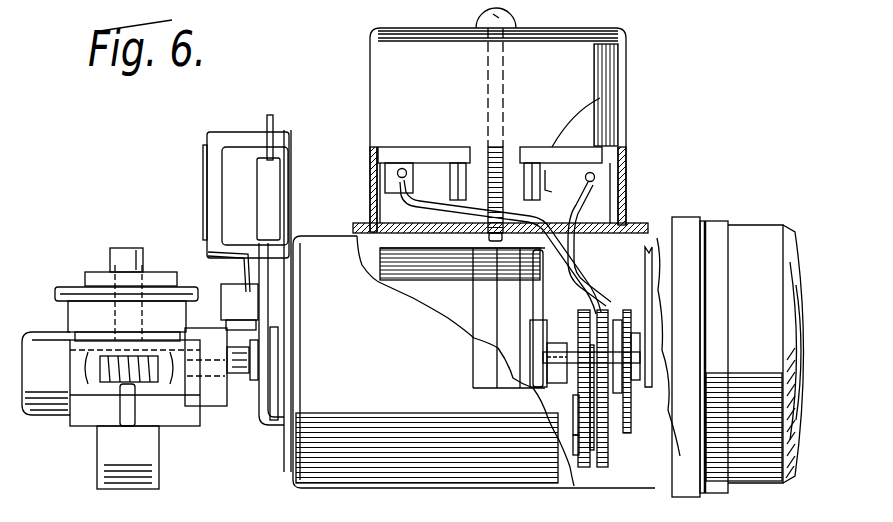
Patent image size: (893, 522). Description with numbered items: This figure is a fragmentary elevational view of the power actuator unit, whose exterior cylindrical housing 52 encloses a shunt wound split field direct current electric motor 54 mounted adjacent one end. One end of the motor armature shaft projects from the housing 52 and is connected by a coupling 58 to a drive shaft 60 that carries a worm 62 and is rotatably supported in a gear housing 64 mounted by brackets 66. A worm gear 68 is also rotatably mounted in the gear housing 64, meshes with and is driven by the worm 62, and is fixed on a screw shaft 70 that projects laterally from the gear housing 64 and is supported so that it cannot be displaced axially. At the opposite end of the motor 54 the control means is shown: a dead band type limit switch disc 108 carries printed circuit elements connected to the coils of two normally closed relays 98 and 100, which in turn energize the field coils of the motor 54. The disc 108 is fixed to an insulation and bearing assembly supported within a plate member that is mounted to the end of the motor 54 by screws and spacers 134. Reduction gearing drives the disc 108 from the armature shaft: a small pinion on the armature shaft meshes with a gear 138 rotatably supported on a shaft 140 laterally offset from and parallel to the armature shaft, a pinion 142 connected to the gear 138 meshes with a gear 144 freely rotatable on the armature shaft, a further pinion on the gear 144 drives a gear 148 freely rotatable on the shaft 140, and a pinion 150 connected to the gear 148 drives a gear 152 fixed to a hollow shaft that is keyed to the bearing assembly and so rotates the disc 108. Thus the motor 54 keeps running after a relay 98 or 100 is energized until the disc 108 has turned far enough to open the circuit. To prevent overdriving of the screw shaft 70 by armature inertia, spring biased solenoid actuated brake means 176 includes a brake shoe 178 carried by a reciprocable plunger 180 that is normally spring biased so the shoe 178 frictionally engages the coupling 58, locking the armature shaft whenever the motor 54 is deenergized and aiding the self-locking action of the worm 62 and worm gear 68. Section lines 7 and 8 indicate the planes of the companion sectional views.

The section line 7- 7 is at (500, 368).
The section line 8- 8 is at (211, 109).
The cylindrical housing 52 is at (338, 477).
The electric motor 54 is at (424, 280).
The coupling 58 is at (230, 410).
The drive shaft 60 is at (200, 378).
The worm 62 is at (110, 392).
The gear housing 64 is at (64, 414).
The brackets 66 is at (204, 338).
The worm gear 68 is at (88, 326).
The screw shaft 70 is at (112, 257).
The relay 98 is at (426, 151).
The relay 100 is at (594, 104).
The limit switch disc 108 is at (655, 254).
The spacers 134 is at (557, 346).
The gear 138 is at (580, 441).
The shaft 140 is at (580, 403).
The pinion 142 is at (588, 472).
The gear 144 is at (582, 308).
The gear 148 is at (601, 472).
The pinion 150 is at (614, 478).
The gear 152 is at (605, 300).
The brake means 176 is at (198, 168).
The brake shoe 178 is at (243, 303).
The plunger 180 is at (241, 262).